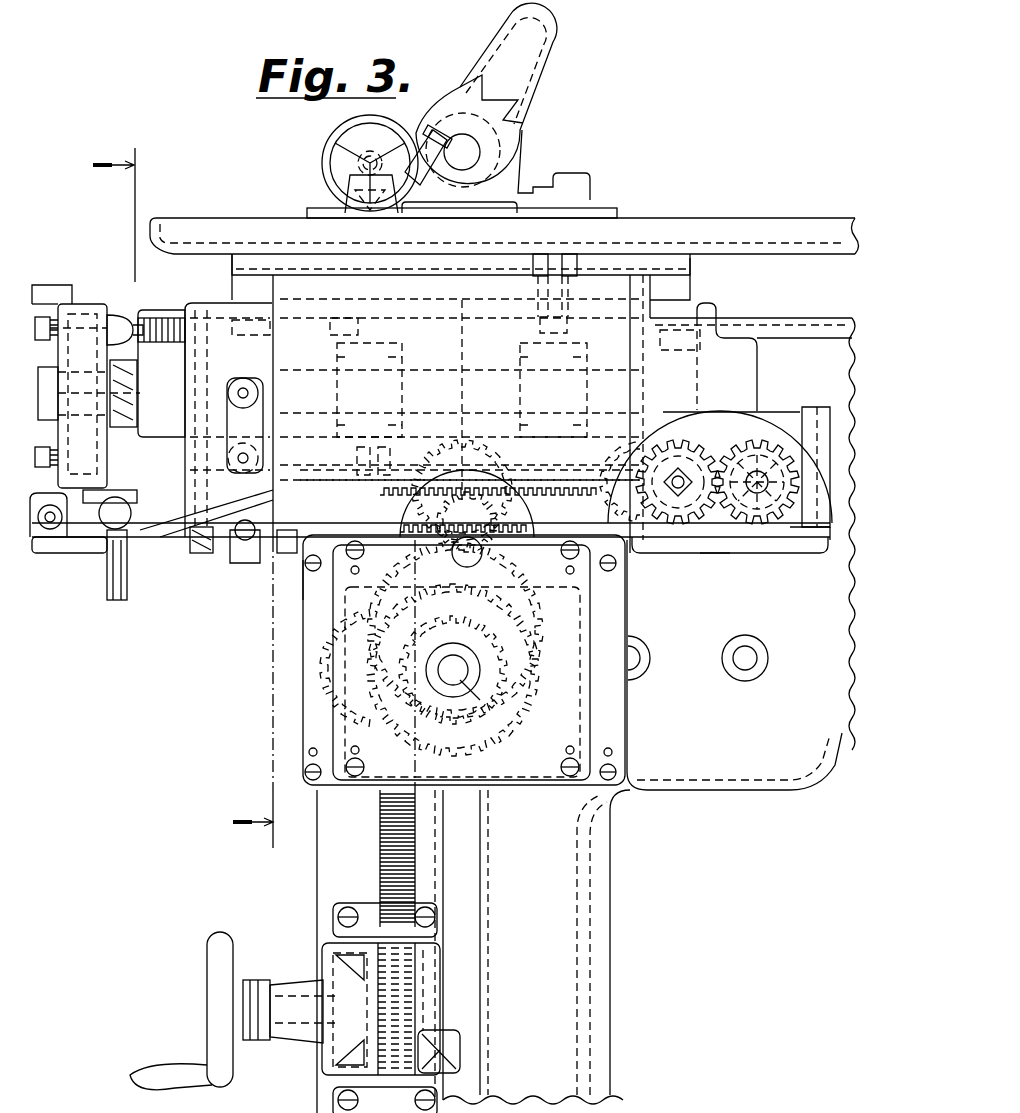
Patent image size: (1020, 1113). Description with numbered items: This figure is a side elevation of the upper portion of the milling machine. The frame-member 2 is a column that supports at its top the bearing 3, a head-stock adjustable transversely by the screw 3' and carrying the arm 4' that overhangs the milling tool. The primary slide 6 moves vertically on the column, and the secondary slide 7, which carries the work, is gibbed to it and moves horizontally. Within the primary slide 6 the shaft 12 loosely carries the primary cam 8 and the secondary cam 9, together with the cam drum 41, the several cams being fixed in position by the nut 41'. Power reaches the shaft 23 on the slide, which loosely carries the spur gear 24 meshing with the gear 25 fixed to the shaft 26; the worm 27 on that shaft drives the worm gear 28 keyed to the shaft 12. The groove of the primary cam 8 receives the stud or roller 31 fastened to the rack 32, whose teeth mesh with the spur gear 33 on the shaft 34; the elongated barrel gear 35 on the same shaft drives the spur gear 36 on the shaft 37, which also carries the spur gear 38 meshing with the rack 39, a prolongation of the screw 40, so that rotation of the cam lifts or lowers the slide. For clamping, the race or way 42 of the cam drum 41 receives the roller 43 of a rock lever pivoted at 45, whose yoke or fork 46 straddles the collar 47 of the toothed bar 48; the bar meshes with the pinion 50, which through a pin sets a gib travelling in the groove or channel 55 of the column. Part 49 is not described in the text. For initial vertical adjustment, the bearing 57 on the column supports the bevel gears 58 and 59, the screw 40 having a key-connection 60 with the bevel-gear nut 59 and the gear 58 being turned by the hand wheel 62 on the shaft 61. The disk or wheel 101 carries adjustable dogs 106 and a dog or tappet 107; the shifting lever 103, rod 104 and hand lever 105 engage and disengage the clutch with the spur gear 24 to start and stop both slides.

The frame-member 2 is at (612, 915).
The bearing 3 is at (496, 169).
The screw 3' is at (357, 164).
The arm 4' is at (520, 95).
The primary slide 6 is at (320, 700).
The secondary slide 7 is at (660, 226).
The primary cam 8 is at (402, 318).
The secondary cam 9 is at (482, 318).
The shaft 12 is at (640, 360).
The shaft 23 is at (760, 440).
The spur gear 24 is at (790, 545).
The gear 25 is at (652, 545).
The shaft 26 is at (676, 530).
The worm 27 is at (740, 525).
The worm gear 28 is at (720, 325).
The stud or roller 31 is at (350, 475).
The rack 32 is at (405, 500).
The spur gear 33 is at (505, 578).
The shaft 34 is at (450, 558).
The barrel gear 35 is at (513, 620).
The spur gear 36 is at (527, 708).
The shaft 37 is at (465, 700).
The spur gear 38 is at (372, 645).
The rack 39 is at (320, 745).
The screw 40 is at (418, 858).
The cam drum 41 is at (185, 307).
The nut 41' is at (89, 304).
The race or way 42 is at (245, 330).
The stud or roller 43 is at (228, 403).
The pivot 45 is at (235, 478).
The yoke or fork 46 is at (280, 555).
The collar 47 is at (165, 537).
The bar 48 is at (300, 600).
The nut 49 is at (200, 565).
The pinion 50 is at (500, 470).
The groove or channel 55 is at (482, 918).
The bearing 57 is at (335, 925).
The bevel gear 58 is at (335, 965).
The bevel gear 59 is at (462, 1048).
The key-connection 60 is at (440, 1020).
The shaft 61 is at (290, 1020).
The hand wheel 62 is at (207, 978).
The disk or wheel 101 is at (85, 440).
The shifting lever 103 is at (840, 580).
The rod 104 is at (712, 550).
The hand lever 105 is at (78, 540).
The adjustable dogs 106 is at (60, 285).
The dog or tappet 107 is at (45, 553).